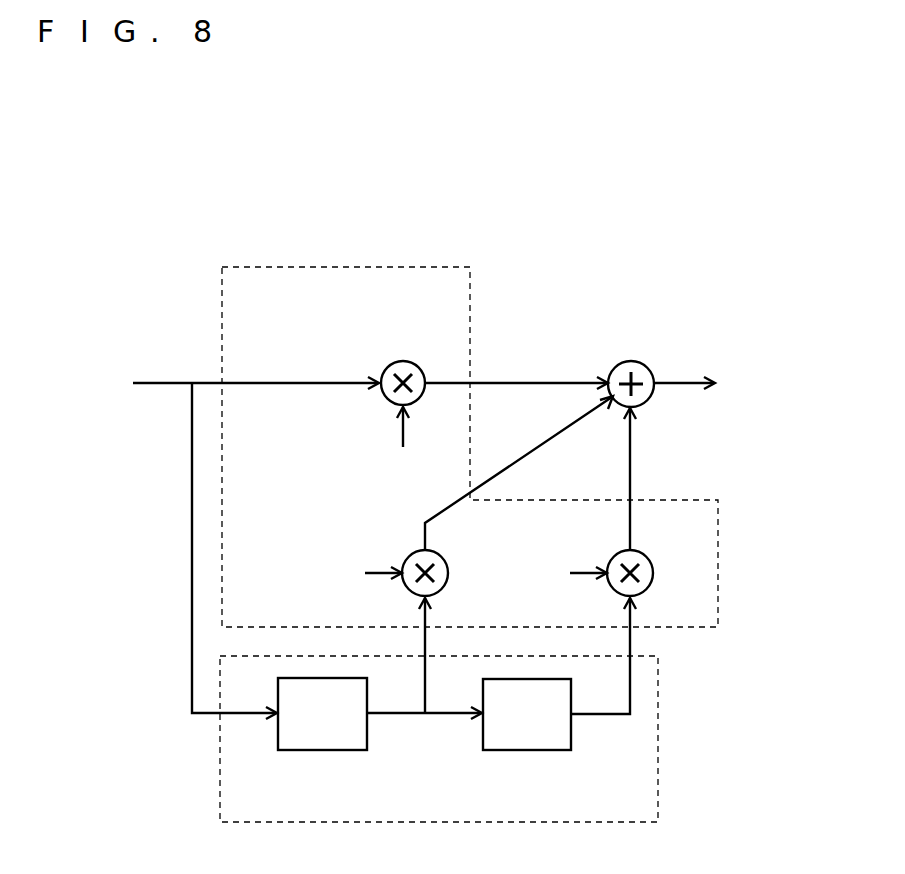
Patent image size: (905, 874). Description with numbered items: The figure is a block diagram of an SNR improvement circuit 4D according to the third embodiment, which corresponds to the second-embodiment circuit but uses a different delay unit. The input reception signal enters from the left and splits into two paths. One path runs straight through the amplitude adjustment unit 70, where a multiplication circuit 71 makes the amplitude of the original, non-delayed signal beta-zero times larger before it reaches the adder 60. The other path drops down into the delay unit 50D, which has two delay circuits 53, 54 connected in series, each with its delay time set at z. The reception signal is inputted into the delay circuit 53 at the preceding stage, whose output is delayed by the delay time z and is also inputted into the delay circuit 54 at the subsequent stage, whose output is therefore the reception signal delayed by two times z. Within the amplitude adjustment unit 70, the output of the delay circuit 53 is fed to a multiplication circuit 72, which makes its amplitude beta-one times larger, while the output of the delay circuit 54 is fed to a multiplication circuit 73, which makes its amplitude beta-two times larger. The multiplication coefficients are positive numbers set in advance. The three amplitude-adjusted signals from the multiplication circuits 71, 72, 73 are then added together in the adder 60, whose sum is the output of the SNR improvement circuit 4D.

The SNR improvement circuit 4D is at (220, 222).
The amplitude adjustment unit 70 is at (348, 267).
The multiplication circuit 71 is at (403, 361).
The multiplication circuit 72 is at (448, 573).
The multiplication circuit 73 is at (653, 573).
The adder 60 is at (631, 361).
The delay unit 50D is at (437, 822).
The delay circuit 53 is at (305, 750).
The delay circuit 54 is at (508, 750).